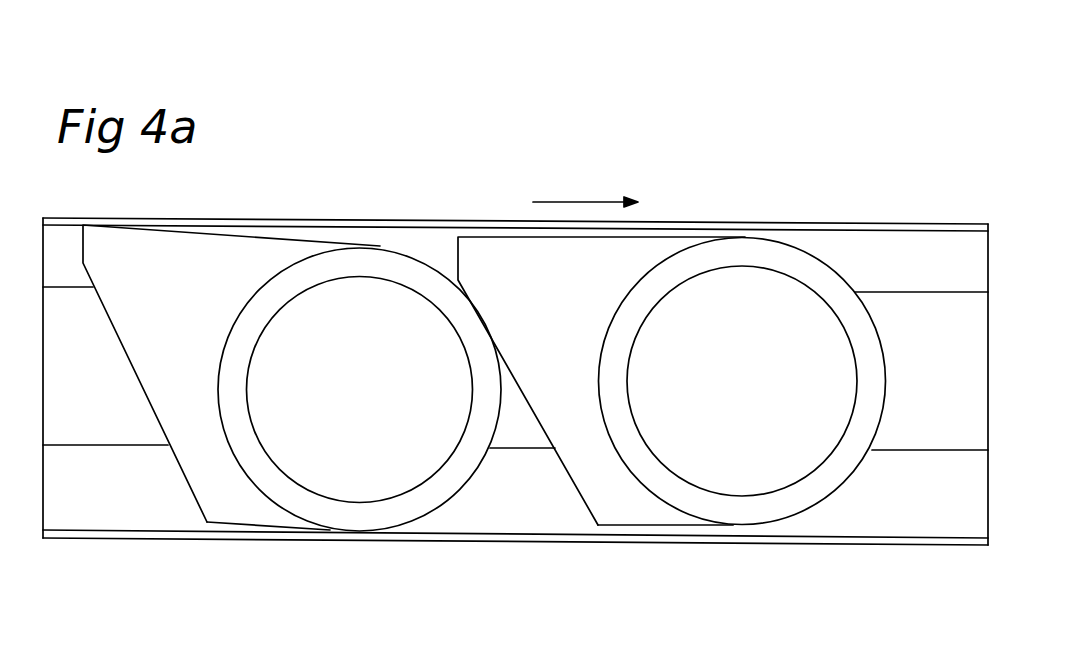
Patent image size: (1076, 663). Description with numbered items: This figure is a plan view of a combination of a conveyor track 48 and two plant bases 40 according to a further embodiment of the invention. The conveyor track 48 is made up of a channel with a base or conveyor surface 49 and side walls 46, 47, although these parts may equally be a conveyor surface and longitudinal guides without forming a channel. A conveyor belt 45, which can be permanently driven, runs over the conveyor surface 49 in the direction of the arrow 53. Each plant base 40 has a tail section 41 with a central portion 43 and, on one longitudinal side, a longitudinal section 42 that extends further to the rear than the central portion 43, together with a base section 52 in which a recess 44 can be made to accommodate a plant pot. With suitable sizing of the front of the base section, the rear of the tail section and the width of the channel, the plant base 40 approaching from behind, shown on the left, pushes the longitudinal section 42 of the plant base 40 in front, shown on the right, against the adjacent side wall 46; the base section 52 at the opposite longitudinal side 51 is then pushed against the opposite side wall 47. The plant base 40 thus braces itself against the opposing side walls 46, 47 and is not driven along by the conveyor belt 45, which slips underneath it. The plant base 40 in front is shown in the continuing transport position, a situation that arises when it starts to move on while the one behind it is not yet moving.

The plant base 40 is at (287, 238).
The tail section 41 is at (140, 400).
The longitudinal section 42 is at (492, 258).
The central portion 43 is at (602, 467).
The recess 44 is at (727, 295).
The conveyor belt 45 is at (968, 350).
The side wall 46 is at (988, 224).
The side wall 47 is at (988, 538).
The conveyor track 48 is at (918, 224).
The conveyor surface 49 is at (968, 268).
The opposite longitudinal side 51 is at (257, 527).
The base section 52 is at (420, 500).
The arrow 53 is at (580, 202).